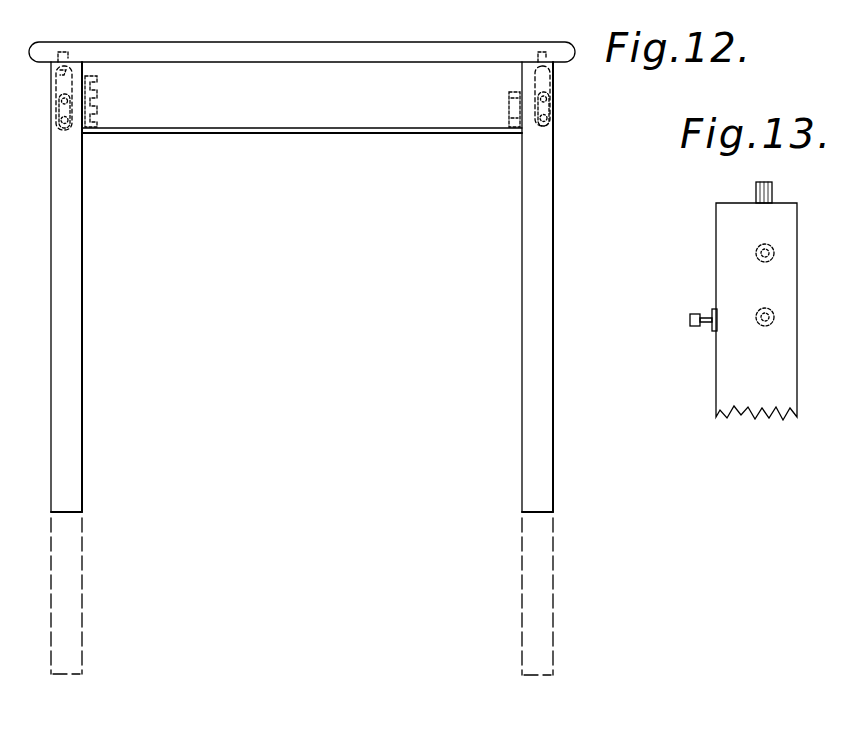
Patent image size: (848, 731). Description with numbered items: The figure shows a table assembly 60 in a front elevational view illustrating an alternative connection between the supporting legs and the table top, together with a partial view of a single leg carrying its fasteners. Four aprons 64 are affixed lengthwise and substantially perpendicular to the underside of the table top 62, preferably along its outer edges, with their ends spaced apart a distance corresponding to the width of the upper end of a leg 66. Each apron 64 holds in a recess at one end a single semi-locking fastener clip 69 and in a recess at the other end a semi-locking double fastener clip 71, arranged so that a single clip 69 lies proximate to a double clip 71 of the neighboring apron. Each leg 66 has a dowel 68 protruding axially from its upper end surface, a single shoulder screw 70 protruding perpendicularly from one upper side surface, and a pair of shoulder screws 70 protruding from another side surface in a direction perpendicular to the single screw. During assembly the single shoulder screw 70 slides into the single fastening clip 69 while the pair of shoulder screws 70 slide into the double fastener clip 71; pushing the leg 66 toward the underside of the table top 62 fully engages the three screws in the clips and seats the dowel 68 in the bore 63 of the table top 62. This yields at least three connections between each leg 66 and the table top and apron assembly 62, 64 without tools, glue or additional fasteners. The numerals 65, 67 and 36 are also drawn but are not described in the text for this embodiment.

In FIG. 12, the table assembly 60 is at (372, 40).
In FIG. 12, the table top 62 is at (285, 50).
In FIG. 12, the bore 63 is at (62, 55).
In FIG. 12, the apron 64 is at (327, 107).
In FIG. 12, the top rail end 65 is at (582, 52).
In FIG. 12, the leg 66 is at (70, 305).
In FIG. 13, the leg 66 is at (738, 388).
In FIG. 12, the slot 67 is at (56, 85).
In FIG. 12, the bolt 36 is at (59, 120).
In FIG. 12, the semi-locking double fastener clip 71 is at (97, 116).
In FIG. 12, the single semi-locking fastener clip 69 is at (518, 133).
In FIG. 13, the dowel 68 is at (756, 192).
In FIG. 13, the shoulder screw 70 is at (755, 312).